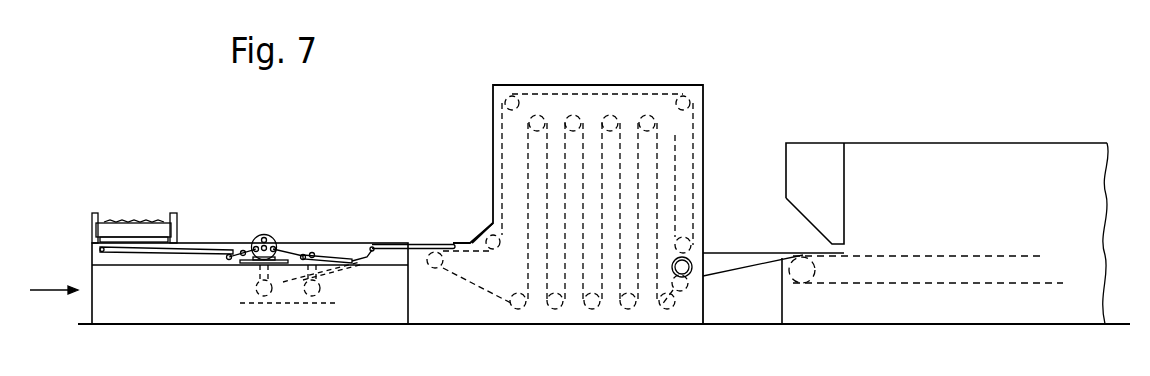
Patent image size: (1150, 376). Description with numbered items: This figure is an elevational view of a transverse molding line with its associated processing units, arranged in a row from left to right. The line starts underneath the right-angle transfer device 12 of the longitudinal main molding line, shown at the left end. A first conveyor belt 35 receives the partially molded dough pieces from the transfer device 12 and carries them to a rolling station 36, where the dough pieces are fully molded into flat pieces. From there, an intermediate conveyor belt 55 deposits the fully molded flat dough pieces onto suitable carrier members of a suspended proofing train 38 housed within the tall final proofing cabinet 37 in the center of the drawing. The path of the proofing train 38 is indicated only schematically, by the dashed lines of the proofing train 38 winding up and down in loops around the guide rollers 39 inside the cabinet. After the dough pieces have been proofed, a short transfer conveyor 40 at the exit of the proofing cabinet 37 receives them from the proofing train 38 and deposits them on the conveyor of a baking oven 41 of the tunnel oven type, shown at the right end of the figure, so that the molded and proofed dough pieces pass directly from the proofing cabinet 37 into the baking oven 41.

The right-angle transfer device 12 is at (130, 220).
The first conveyor belt 35 is at (198, 246).
The rolling station 36 is at (276, 236).
The final proofing cabinet 37 is at (492, 210).
The suspended proofing train 38 is at (500, 127).
The guide rollers 39 is at (537, 114).
The short transfer conveyor 40 is at (737, 253).
The baking oven 41 is at (896, 143).
The intermediate conveyor belt 55 is at (354, 244).